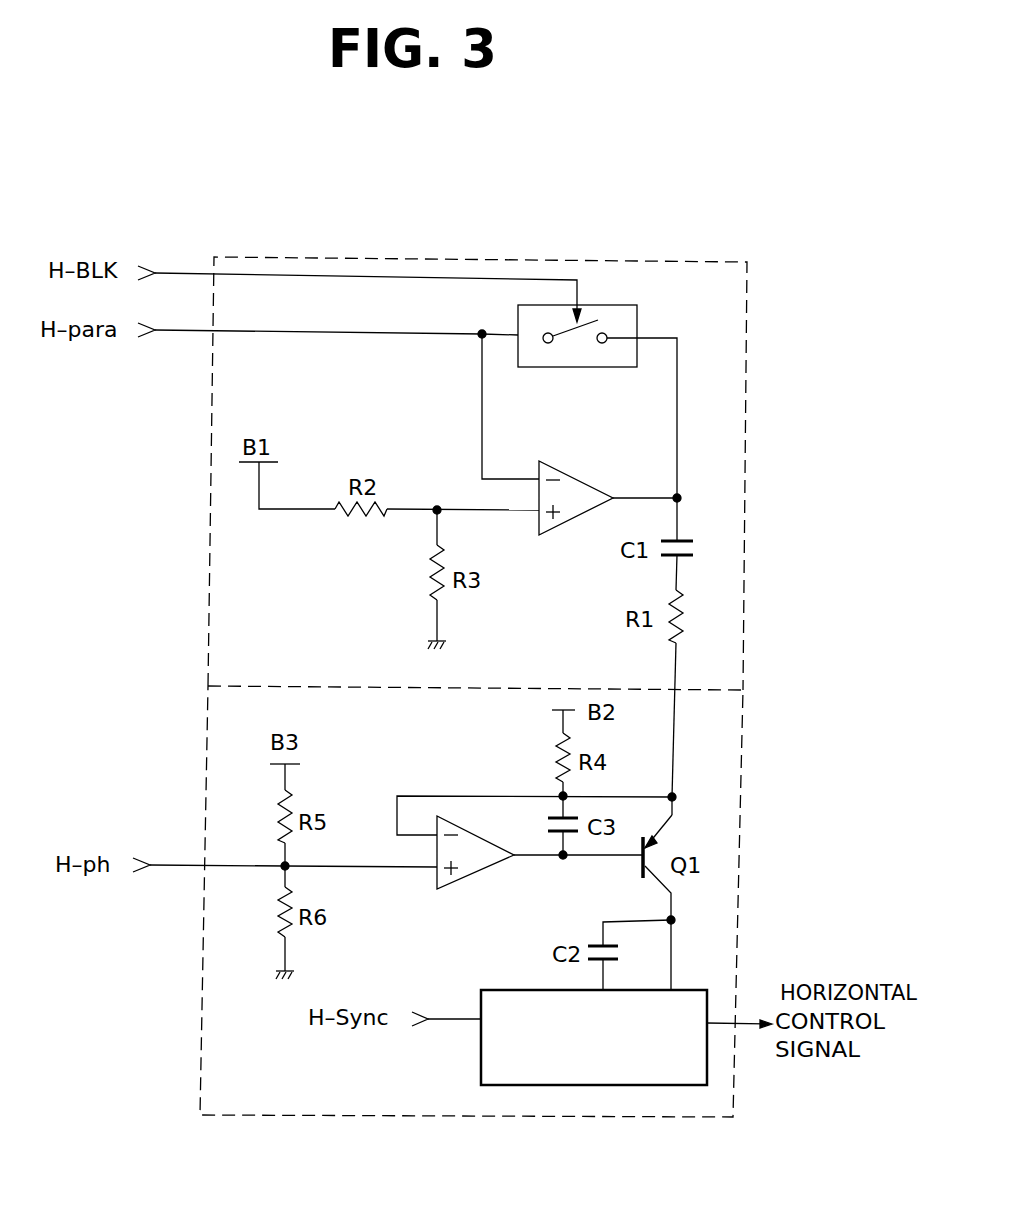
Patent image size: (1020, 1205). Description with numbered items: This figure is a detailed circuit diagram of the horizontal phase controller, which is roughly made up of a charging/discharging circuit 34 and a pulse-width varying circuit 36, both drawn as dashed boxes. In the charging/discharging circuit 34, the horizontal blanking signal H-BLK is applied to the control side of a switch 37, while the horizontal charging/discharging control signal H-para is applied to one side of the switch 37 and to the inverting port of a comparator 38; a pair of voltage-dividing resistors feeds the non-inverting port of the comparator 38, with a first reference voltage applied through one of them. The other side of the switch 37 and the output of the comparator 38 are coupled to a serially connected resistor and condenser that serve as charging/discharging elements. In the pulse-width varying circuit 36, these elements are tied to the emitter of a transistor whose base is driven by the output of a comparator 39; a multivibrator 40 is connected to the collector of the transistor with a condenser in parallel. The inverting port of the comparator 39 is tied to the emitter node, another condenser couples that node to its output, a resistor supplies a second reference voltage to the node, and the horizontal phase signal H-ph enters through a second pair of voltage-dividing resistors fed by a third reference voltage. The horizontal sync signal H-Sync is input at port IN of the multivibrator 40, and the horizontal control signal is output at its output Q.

The charging/discharging circuit 34 is at (492, 262).
The pulse-width varying circuit 36 is at (738, 828).
The switch 37 is at (637, 318).
The comparator 38 is at (583, 478).
The comparator 39 is at (485, 870).
The multivibrator 40 is at (595, 1085).